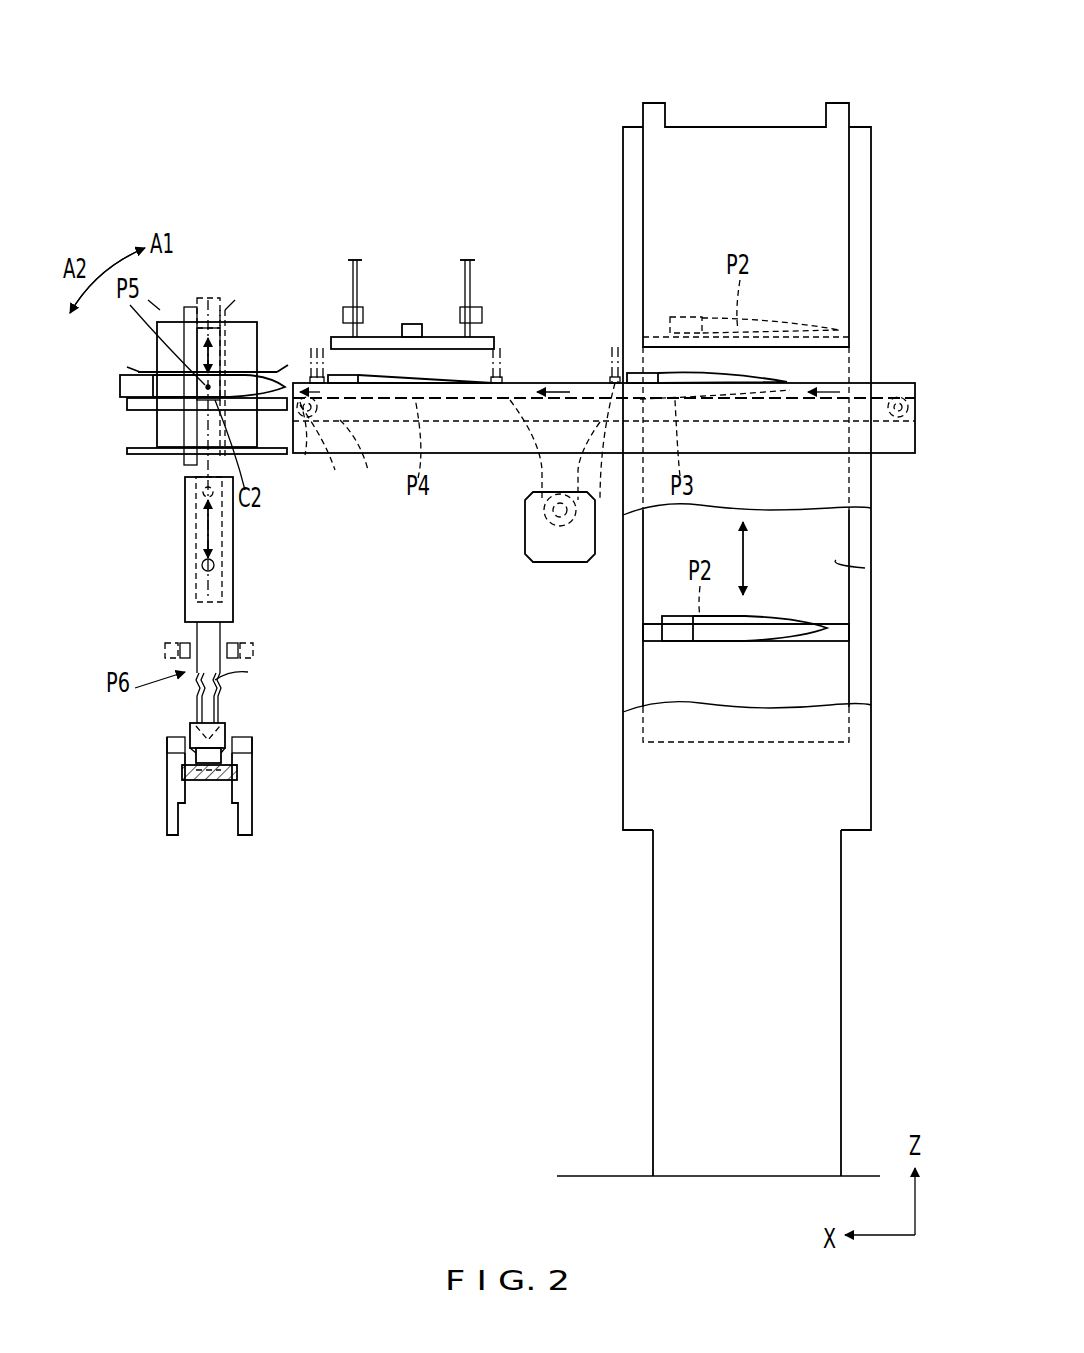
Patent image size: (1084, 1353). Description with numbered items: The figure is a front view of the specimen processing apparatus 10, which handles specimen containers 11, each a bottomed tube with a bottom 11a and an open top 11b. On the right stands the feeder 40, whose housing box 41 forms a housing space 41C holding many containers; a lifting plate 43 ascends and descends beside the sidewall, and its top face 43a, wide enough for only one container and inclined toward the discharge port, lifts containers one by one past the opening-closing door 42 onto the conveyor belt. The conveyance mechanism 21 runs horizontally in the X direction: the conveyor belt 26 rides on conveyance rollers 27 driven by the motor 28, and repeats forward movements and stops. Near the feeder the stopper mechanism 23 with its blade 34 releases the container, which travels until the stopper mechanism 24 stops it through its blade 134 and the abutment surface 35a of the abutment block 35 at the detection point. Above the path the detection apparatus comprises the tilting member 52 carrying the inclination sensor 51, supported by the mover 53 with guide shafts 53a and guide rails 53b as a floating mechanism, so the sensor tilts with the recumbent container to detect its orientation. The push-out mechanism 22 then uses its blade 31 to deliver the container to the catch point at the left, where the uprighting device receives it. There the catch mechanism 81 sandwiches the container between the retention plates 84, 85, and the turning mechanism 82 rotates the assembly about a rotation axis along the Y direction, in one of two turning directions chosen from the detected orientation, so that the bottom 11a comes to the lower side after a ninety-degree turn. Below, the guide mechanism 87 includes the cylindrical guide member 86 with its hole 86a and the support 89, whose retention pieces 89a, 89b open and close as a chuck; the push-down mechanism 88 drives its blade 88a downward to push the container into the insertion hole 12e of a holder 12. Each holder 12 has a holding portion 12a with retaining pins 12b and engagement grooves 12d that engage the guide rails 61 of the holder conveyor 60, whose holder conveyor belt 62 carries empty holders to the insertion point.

The specimen processing apparatus 10 is at (583, 84).
The specimen container 11 is at (195, 378).
The bottom 11a is at (300, 390).
The top 11b is at (208, 298).
The holder 12 is at (225, 725).
The holding portion 12a is at (205, 735).
The retaining pins 12b is at (222, 700).
The engagement grooves 12d is at (196, 758).
The insertion hole 12e is at (222, 750).
The conveyance mechanism 21 is at (455, 453).
The push-out mechanism 22 is at (500, 380).
The stopper mechanism 23 is at (598, 410).
The stopper mechanism 24 is at (314, 380).
The conveyor belt 26 is at (575, 440).
The conveyance rollers 27 is at (307, 418).
The motor 28 is at (556, 562).
The blade 31 is at (485, 400).
The blade 34 is at (614, 375).
The abutment block 35 is at (317, 449).
The abutment surface 35a is at (361, 457).
The feeder 40 is at (871, 193).
The housing box 41 is at (871, 512).
The housing space 41C is at (862, 565).
The opening-closing door 42 is at (849, 257).
The lifting plate 43 is at (849, 640).
The top face 43a is at (840, 624).
The inclination sensor 51 is at (410, 324).
The tilting member 52 is at (440, 337).
The mover 53 is at (470, 300).
The guide shafts 53a is at (470, 275).
The guide rails 53b is at (482, 315).
The holder conveyor 60 is at (252, 810).
The guide rails 61 is at (167, 742).
The holder conveyor belt 62 is at (205, 772).
The catch mechanism 81 is at (140, 370).
The turning mechanism 82 is at (248, 322).
The retention plate 84 is at (226, 350).
The retention plate 85 is at (140, 440).
The guide member 86 is at (185, 532).
The hole 86a is at (222, 543).
The guide mechanism 87 is at (185, 512).
The push-down mechanism 88 is at (215, 565).
The blade 88a is at (203, 492).
The support 89 is at (240, 645).
The retention piece 89a is at (248, 672).
The retention piece 89b is at (165, 652).
The blade 134 is at (318, 375).